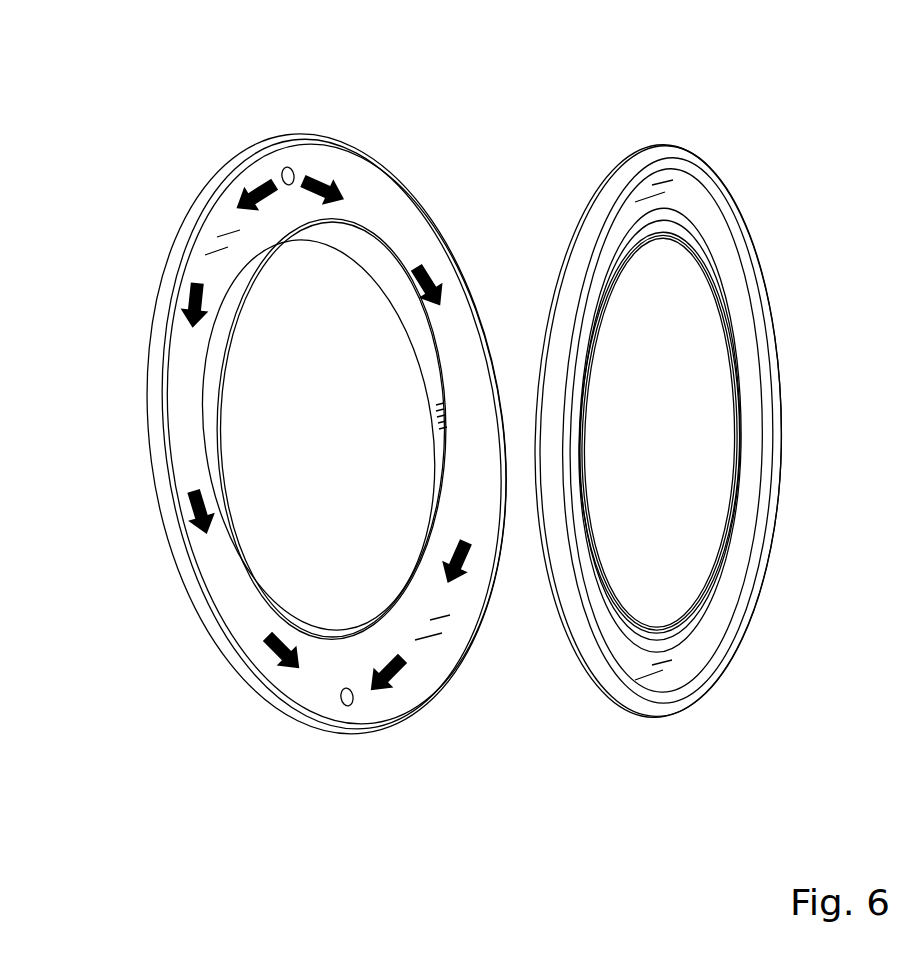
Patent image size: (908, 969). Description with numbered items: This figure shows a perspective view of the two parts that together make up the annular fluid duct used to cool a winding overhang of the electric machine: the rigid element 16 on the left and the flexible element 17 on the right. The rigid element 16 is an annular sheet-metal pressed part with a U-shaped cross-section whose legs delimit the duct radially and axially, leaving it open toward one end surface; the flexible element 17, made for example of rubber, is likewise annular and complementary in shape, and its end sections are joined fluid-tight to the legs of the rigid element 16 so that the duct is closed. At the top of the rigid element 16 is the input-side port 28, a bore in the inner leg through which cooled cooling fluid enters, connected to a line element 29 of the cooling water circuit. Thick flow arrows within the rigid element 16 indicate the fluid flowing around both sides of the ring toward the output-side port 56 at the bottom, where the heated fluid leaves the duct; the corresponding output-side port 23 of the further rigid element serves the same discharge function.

The rigid element 16 is at (326, 439).
The flexible element 17 is at (705, 140).
The input-side port 28 is at (289, 106).
The line element 29 is at (287, 167).
The output-side port 56 is at (317, 769).
The output-side port 23 is at (343, 705).